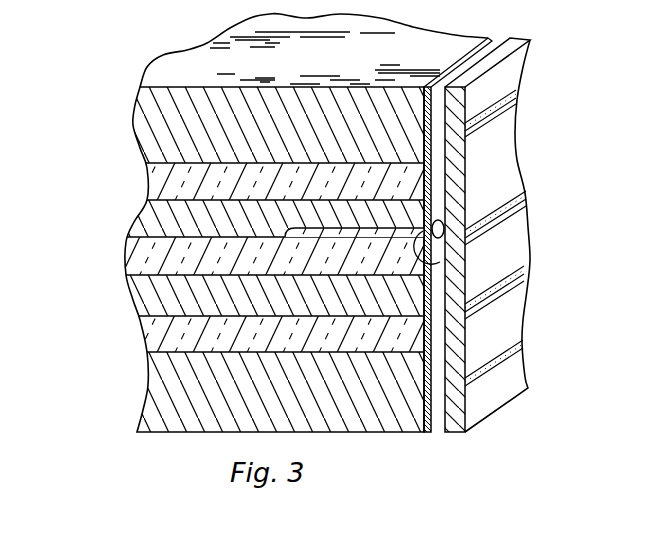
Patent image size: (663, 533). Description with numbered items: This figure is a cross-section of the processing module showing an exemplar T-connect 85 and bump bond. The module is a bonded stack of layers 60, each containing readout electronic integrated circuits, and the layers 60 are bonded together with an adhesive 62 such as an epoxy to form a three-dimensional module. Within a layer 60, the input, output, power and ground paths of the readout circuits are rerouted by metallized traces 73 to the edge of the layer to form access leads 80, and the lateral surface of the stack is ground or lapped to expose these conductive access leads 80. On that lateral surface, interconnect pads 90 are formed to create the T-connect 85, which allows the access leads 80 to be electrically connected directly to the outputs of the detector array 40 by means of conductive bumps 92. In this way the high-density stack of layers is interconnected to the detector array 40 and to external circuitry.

The detector array 40 is at (507, 343).
The layers 60 is at (133, 257).
The adhesive 62 is at (163, 382).
The metallized traces 73 is at (338, 228).
The access leads 80 is at (430, 266).
The T-connect 85 is at (472, 193).
The interconnect pads 90 is at (440, 262).
The conductive bumps 92 is at (442, 224).